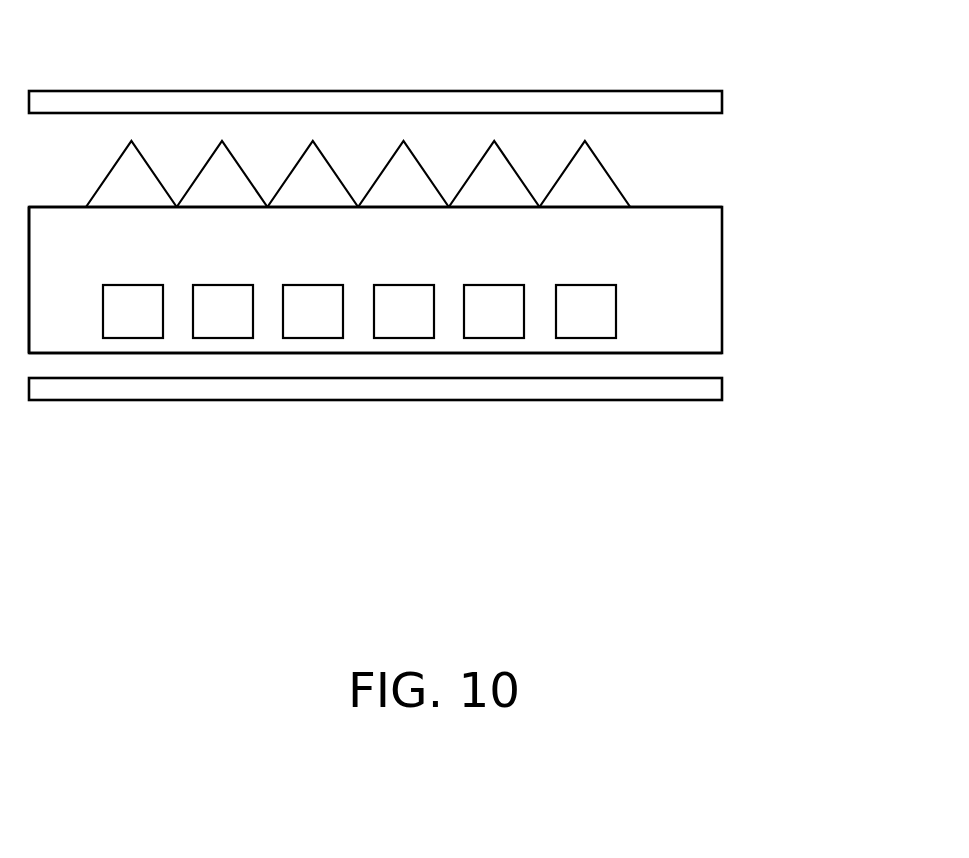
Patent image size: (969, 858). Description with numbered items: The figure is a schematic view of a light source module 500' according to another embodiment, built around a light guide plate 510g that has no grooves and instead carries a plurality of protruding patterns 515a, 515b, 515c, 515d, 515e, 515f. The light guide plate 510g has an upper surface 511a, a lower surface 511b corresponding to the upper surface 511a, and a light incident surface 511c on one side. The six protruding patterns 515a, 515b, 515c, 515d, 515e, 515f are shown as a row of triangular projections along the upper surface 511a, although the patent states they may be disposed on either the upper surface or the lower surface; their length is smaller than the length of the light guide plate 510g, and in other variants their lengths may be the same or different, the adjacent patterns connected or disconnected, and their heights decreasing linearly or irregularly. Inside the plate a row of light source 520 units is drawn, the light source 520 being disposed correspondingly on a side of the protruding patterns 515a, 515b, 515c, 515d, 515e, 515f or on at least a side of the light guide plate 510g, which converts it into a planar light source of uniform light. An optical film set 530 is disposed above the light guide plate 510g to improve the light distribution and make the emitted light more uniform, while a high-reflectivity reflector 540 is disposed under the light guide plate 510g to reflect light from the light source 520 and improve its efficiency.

The light source module 500' is at (735, 460).
The light guide plate 510g is at (714, 280).
The upper surface 511a is at (700, 207).
The lower surface 511b is at (703, 354).
The light incident surface 511c is at (64, 316).
The protruding pattern 515a is at (136, 178).
The protruding pattern 515b is at (226, 178).
The protruding pattern 515c is at (317, 178).
The protruding pattern 515d is at (407, 178).
The protruding pattern 515e is at (498, 178).
The protruding pattern 515f is at (588, 178).
The light source 520 is at (598, 295).
The optical film set 530 is at (717, 102).
The reflector 540 is at (720, 388).